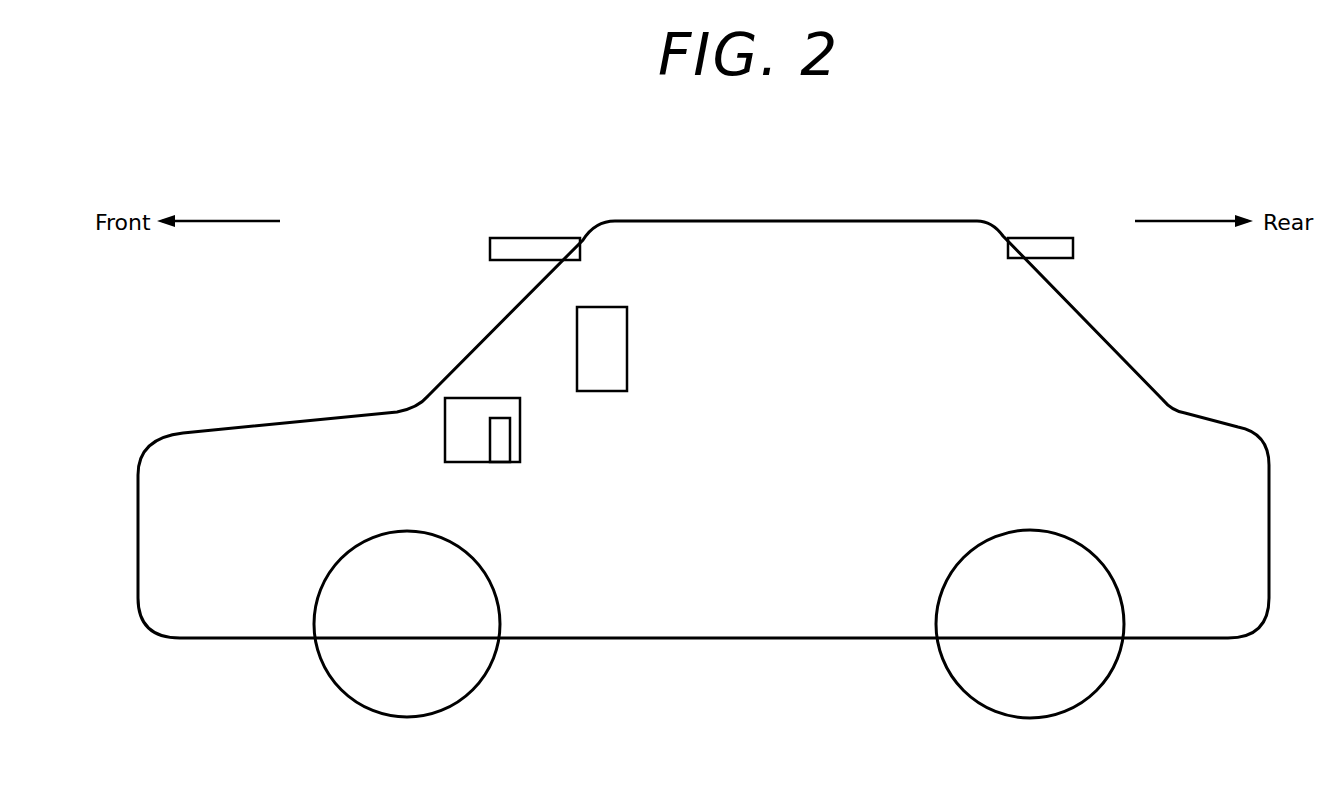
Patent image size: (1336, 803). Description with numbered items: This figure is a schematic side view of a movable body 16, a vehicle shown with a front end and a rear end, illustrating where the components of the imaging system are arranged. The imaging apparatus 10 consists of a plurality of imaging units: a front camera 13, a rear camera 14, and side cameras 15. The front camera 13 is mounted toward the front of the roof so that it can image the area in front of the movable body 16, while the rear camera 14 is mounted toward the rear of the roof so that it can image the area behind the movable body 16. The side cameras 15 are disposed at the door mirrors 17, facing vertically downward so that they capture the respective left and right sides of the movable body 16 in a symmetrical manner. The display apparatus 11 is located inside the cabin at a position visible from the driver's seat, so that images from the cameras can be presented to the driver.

The imaging apparatus 10 is at (577, 148).
The display apparatus 11 is at (617, 360).
The front camera 13 is at (514, 246).
The rear camera 14 is at (1053, 248).
The side cameras 15 is at (498, 428).
The movable body 16 is at (286, 417).
The door mirrors 17 is at (445, 423).